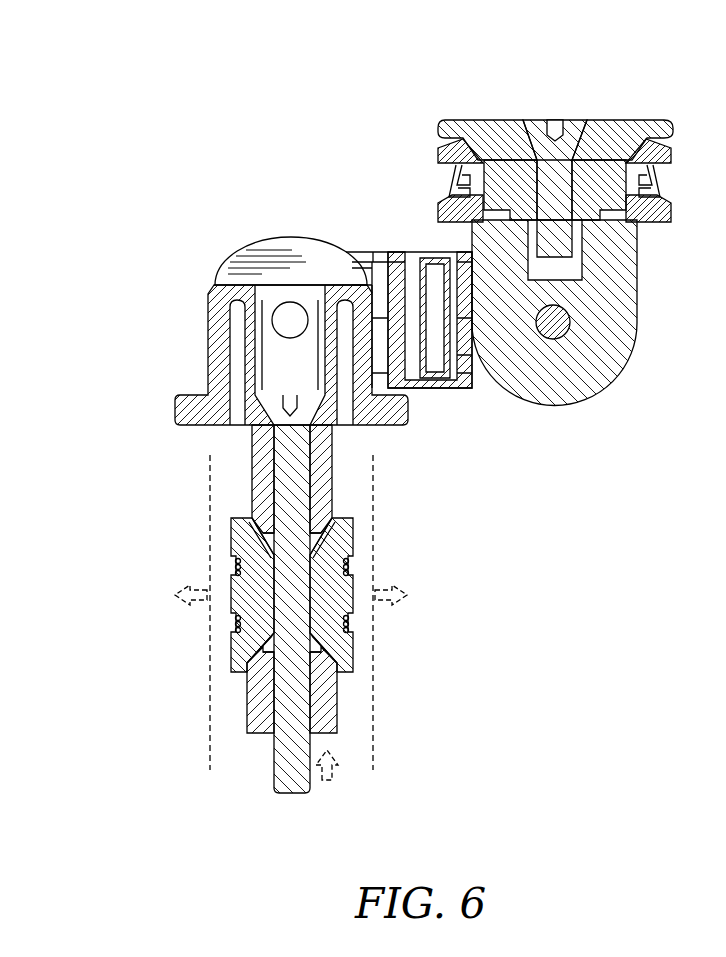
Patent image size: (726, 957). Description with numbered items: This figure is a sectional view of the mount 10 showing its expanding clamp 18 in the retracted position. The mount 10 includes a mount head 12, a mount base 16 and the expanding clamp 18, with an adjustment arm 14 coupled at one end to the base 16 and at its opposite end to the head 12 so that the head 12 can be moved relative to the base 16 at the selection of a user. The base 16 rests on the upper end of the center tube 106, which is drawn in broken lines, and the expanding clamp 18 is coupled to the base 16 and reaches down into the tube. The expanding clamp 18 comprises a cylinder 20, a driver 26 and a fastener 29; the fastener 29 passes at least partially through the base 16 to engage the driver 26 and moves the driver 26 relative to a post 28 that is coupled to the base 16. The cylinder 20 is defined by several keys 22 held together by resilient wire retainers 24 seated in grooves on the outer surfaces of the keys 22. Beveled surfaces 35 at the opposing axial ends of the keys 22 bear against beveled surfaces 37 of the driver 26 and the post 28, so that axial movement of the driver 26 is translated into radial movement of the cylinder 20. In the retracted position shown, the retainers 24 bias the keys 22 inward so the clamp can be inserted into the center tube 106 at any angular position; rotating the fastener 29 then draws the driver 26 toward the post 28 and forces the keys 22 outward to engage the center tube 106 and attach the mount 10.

The mount 10 is at (235, 130).
The mount head 12 is at (529, 106).
The adjustment arm 14 is at (386, 246).
The mount base 16 is at (207, 290).
The expanding clamp 18 is at (362, 529).
The cylinder 20 is at (360, 590).
The keys 22 is at (314, 609).
The retainers 24 is at (225, 625).
The driver 26 is at (240, 702).
The post 28 is at (245, 463).
The fastener 29 is at (289, 472).
The beveled surfaces 35 is at (340, 543).
The beveled surfaces 37 is at (320, 513).
The center tube 106 is at (375, 680).